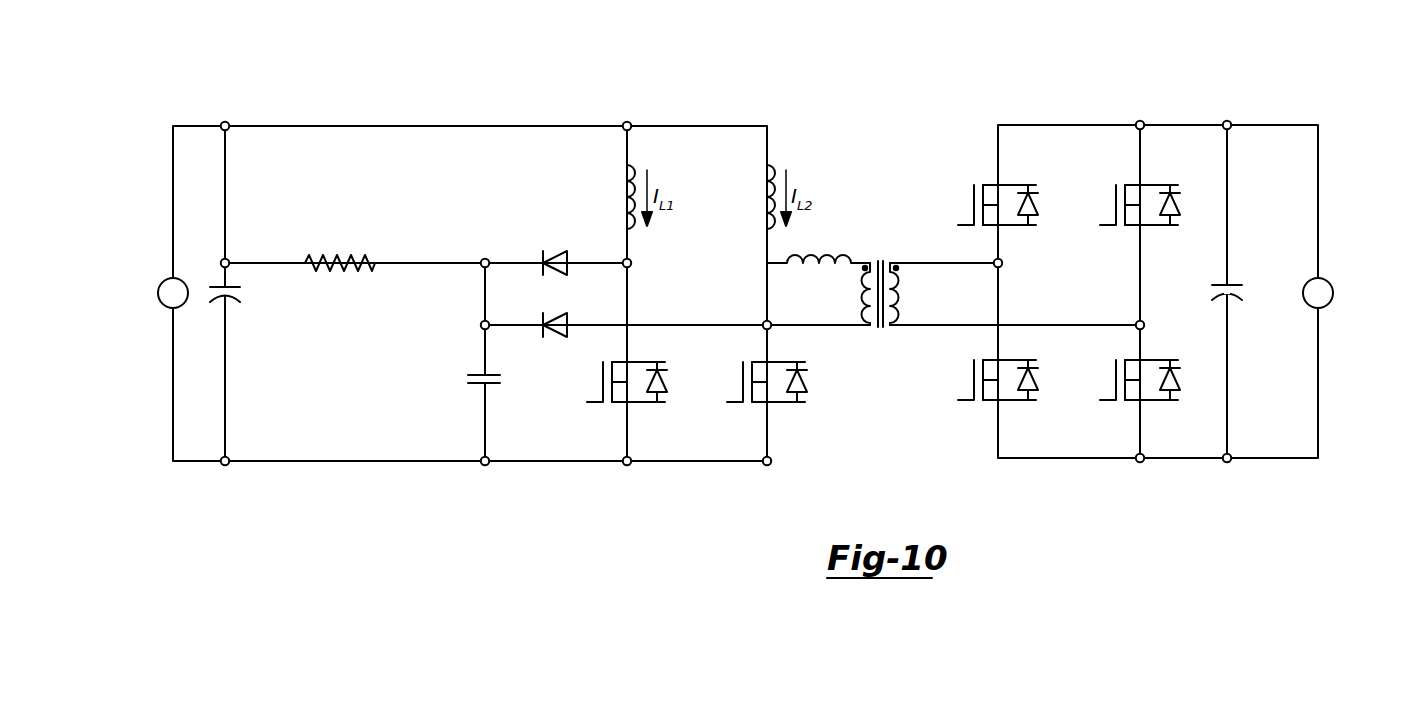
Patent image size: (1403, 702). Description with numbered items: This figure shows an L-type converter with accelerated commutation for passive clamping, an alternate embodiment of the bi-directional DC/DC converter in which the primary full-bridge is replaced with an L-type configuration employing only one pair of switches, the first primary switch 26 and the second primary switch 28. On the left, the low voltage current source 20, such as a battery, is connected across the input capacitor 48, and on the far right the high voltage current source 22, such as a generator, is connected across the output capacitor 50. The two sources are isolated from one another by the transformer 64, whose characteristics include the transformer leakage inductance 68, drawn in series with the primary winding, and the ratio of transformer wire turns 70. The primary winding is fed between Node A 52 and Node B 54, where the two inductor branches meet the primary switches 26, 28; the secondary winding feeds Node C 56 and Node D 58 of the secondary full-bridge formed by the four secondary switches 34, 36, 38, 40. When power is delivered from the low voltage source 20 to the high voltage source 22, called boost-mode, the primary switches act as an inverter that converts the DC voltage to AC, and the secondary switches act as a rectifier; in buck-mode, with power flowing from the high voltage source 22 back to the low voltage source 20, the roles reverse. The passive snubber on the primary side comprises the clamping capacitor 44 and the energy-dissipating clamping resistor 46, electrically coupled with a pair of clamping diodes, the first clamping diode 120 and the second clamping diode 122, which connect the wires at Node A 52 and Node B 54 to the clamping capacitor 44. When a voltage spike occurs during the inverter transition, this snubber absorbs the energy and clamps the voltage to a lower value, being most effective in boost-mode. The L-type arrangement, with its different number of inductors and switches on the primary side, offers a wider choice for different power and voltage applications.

The low voltage current source Vb 20 is at (136, 245).
The high voltage current source Vo 22 is at (1366, 250).
The switch S1 26 is at (585, 400).
The switch S2 28 is at (722, 388).
The switch S5 34 is at (974, 186).
The switch S6 36 is at (1092, 385).
The switch S7 38 is at (955, 382).
The switch S8 40 is at (1105, 187).
The clamping capacitor Cc 44 is at (463, 358).
The clamping resistor Rc 46 is at (335, 320).
The input capacitor Ci 48 is at (240, 352).
The output capacitor Co 50 is at (1270, 292).
The Node A 52 is at (652, 243).
The Node B 54 is at (745, 306).
The Node C 56 is at (1021, 258).
The Node D 58 is at (1168, 335).
The transformer T 64 is at (886, 218).
The transformer leakage inductance Llk 68 is at (822, 216).
The ratio of transformer wire turns 1:nT 70 is at (877, 367).
The clamp diode Dc1 120 is at (532, 228).
The clamp diode Dc2 122 is at (512, 316).